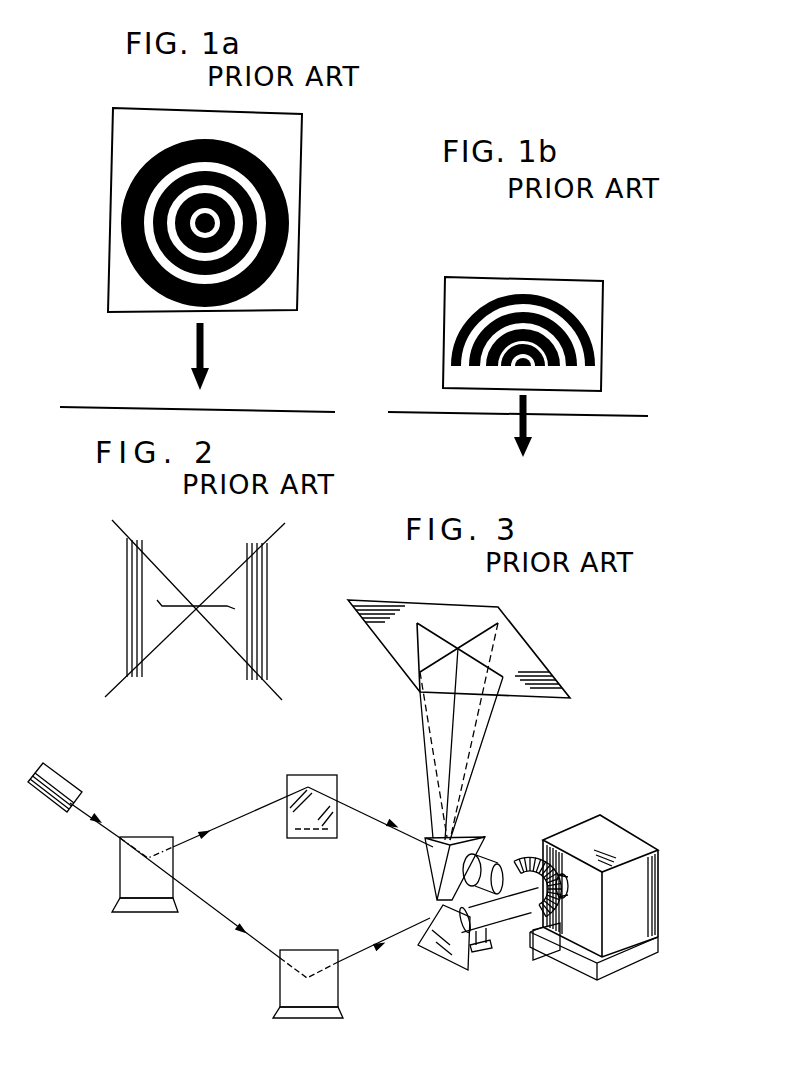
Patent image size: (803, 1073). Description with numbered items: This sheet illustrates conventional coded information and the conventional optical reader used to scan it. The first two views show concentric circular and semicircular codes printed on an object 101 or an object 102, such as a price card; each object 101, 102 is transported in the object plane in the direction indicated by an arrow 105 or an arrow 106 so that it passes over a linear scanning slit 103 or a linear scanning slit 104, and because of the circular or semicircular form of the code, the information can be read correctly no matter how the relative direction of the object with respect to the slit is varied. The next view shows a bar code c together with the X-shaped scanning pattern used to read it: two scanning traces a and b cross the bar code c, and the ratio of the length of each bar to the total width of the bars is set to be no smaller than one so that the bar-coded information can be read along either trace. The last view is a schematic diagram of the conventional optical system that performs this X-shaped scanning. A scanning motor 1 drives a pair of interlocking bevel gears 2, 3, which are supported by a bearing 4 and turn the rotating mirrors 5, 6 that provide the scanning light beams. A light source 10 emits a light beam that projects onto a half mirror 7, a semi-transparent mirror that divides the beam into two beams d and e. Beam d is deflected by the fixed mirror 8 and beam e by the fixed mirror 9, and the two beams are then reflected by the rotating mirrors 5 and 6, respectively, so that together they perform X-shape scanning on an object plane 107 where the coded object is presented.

In FIG. 1A, the object 101 is at (302, 207).
In FIG. 1B, the object 102 is at (604, 330).
In FIG. 1A, the linear scanning slit 103 is at (305, 407).
In FIG. 1B, the linear scanning slit 104 is at (442, 411).
In FIG. 1A, the arrow 105 is at (204, 350).
In FIG. 1B, the arrow 106 is at (528, 427).
In FIG. 3, the object plane 107 is at (536, 657).
In FIG. 3, the scanning motor 1 is at (638, 835).
In FIG. 3, the interlocking bevel gear 2 is at (517, 862).
In FIG. 3, the interlocking bevel gear 3 is at (530, 927).
In FIG. 3, the bearing 4 is at (487, 845).
In FIG. 3, the rotating mirror 5 is at (457, 837).
In FIG. 3, the rotating mirror 6 is at (443, 952).
In FIG. 3, the half mirror 7 is at (157, 837).
In FIG. 3, the fixed mirror 8 is at (325, 775).
In FIG. 3, the fixed mirror 9 is at (338, 990).
In FIG. 3, the light source 10 is at (75, 783).
In FIG. 2, the scanning trace a is at (275, 532).
In FIG. 2, the scanning trace b is at (270, 687).
In FIG. 2, the bar code c is at (265, 600).
In FIG. 3, the light beam d is at (223, 823).
In FIG. 3, the light beam e is at (262, 943).